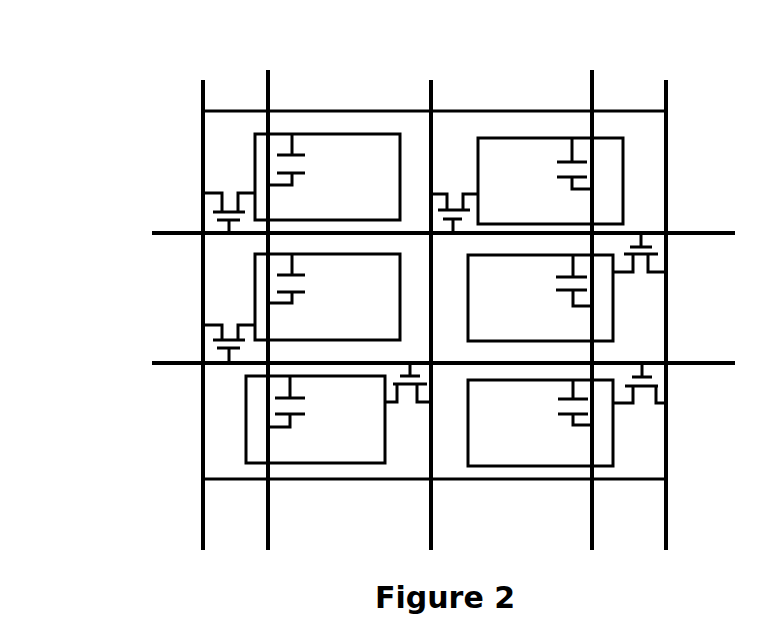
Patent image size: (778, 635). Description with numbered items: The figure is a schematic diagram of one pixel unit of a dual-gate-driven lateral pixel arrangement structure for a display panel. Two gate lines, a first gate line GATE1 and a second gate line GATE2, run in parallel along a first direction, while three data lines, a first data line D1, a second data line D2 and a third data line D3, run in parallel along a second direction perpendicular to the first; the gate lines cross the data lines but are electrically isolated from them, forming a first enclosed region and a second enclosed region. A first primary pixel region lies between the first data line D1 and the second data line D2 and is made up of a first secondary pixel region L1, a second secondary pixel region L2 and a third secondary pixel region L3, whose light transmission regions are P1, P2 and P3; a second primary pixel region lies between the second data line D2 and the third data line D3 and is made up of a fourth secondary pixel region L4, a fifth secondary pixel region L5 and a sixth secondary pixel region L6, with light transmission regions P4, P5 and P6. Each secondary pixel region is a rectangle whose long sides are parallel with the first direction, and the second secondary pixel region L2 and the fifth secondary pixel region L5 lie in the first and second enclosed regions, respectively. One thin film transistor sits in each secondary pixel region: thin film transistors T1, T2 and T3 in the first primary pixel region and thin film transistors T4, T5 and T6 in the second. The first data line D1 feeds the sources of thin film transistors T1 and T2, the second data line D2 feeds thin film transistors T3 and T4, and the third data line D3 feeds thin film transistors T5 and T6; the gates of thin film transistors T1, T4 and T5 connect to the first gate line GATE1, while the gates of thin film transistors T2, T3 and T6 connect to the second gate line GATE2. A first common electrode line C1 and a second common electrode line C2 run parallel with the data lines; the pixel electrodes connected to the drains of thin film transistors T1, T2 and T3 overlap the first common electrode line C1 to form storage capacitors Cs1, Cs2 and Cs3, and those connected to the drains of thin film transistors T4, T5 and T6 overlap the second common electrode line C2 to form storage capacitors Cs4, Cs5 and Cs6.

The first data line D1 is at (193, 294).
The second data line D2 is at (438, 294).
The third data line D3 is at (649, 294).
The first common electrode line C1 is at (269, 293).
The second common electrode line C2 is at (594, 293).
The first gate line GATE1 is at (378, 233).
The second gate line GATE2 is at (378, 360).
The light transmission region of the first secondary pixel region P1 is at (327, 177).
The light transmission region of the second secondary pixel region P2 is at (327, 297).
The light transmission region of the third secondary pixel region P3 is at (315, 419).
The light transmission region of the fourth secondary pixel region P4 is at (550, 181).
The light transmission region of the fifth secondary pixel region P5 is at (540, 298).
The light transmission region of the sixth secondary pixel region P6 is at (540, 423).
The storage capacitor Cs1 is at (286, 173).
The storage capacitor Cs2 is at (287, 291).
The storage capacitor Cs3 is at (287, 416).
The storage capacitor Cs4 is at (572, 177).
The storage capacitor Cs5 is at (572, 290).
The storage capacitor Cs6 is at (572, 415).
The thin film transistor T1 is at (228, 193).
The thin film transistor T2 is at (226, 322).
The thin film transistor T3 is at (422, 404).
The thin film transistor T4 is at (447, 192).
The thin film transistor T5 is at (652, 250).
The thin film transistor T6 is at (656, 405).
The first secondary pixel region L1 is at (228, 134).
The second secondary pixel region L2 is at (223, 255).
The third secondary pixel region L3 is at (223, 387).
The fourth secondary pixel region L4 is at (643, 135).
The fifth secondary pixel region L5 is at (638, 349).
The sixth secondary pixel region L6 is at (638, 462).